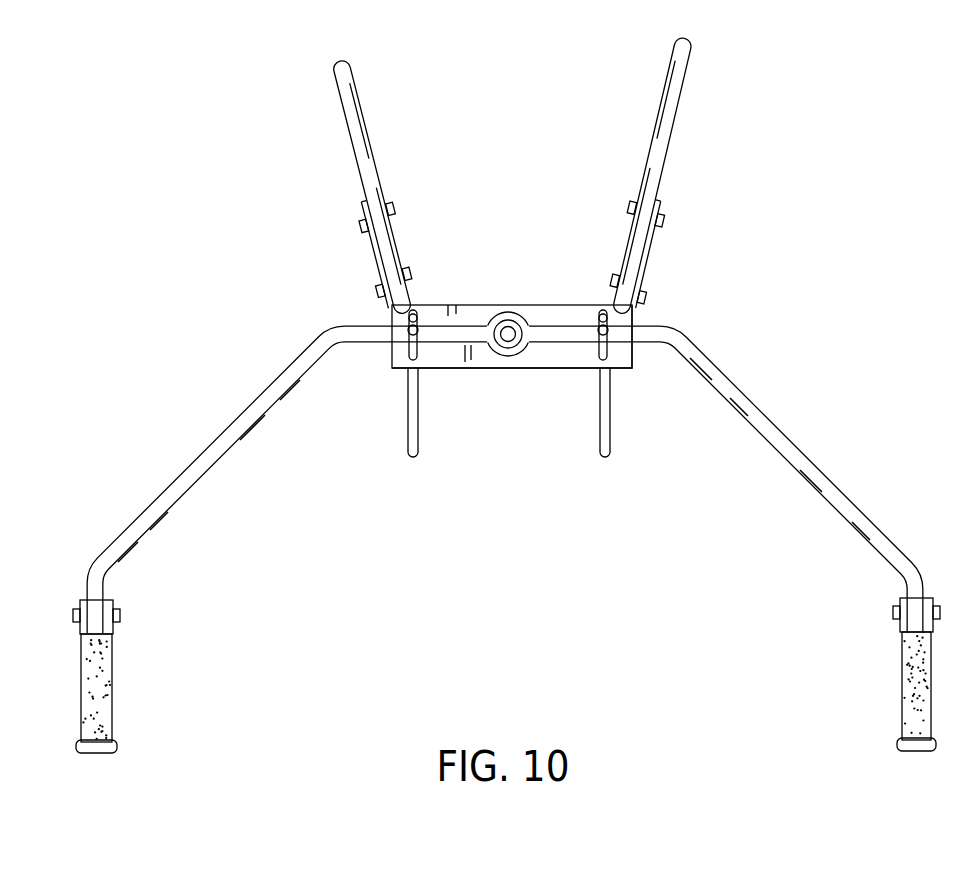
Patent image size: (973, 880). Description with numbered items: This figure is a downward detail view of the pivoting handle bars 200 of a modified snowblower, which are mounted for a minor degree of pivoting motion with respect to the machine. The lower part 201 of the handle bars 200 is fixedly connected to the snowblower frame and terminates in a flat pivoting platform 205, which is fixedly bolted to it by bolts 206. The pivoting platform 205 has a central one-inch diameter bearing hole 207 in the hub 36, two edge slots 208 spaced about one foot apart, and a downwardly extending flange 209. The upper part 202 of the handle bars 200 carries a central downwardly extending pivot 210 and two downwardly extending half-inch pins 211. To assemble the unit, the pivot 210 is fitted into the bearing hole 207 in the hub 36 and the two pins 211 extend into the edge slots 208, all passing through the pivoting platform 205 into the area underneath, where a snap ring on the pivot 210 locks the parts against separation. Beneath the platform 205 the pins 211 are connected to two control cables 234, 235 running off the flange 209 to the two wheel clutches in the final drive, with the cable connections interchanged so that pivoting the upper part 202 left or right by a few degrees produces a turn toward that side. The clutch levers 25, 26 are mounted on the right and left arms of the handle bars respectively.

The lever 25 is at (898, 624).
The lever 26 is at (110, 627).
The hub 36 is at (510, 318).
The handle bars 200 is at (195, 432).
The lower part of the handle bars 201 is at (668, 116).
The upper part of the handle bars 202 is at (789, 441).
The pivoting platform 205 is at (443, 315).
The bolts 206 is at (356, 214).
The bearing hole 207 is at (521, 355).
The edge slots 208 is at (405, 318).
The flange 209 is at (622, 370).
The pivot 210 is at (493, 347).
The pins 211 is at (590, 318).
The control cable 234 is at (608, 437).
The control cable 235 is at (410, 430).